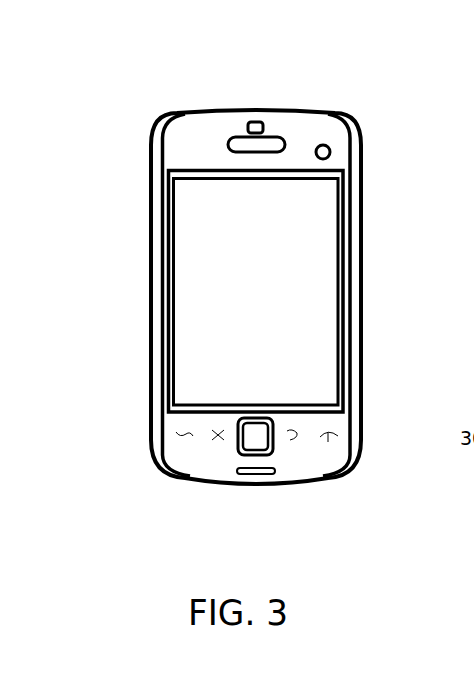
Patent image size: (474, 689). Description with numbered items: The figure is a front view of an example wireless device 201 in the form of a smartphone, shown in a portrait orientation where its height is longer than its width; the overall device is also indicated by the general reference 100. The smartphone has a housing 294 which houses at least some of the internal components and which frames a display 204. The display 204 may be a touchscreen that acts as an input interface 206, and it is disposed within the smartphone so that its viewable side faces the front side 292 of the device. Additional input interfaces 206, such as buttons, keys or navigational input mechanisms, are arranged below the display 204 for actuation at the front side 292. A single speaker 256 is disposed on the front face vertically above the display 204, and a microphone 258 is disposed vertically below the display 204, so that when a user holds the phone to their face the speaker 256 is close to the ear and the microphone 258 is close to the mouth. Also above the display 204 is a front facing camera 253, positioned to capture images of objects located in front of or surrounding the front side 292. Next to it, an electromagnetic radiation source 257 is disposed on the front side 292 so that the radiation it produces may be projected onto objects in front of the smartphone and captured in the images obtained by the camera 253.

The mobile device 100 is at (143, 99).
The wireless device 201 is at (192, 90).
The display 204 is at (168, 246).
The input interface 206 is at (168, 311).
The front facing camera 253 is at (255, 120).
The speaker 256 is at (278, 136).
The electromagnetic radiation source 257 is at (322, 144).
The microphone 258 is at (265, 476).
The front side 292 is at (165, 420).
The housing 294 is at (364, 191).